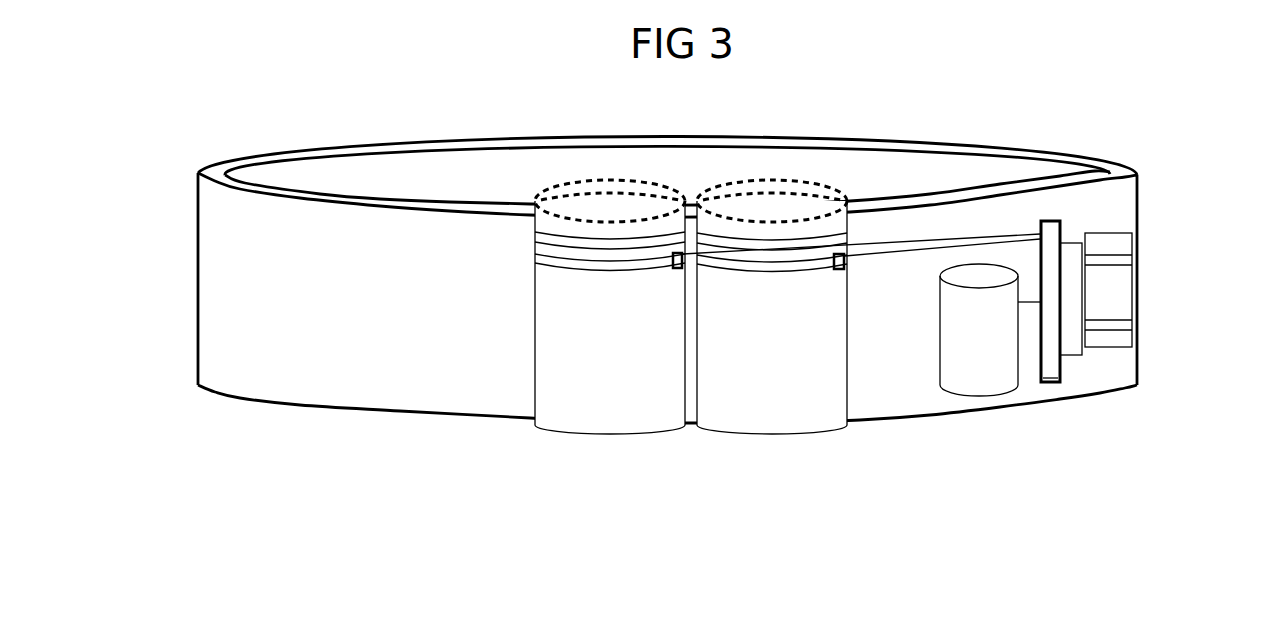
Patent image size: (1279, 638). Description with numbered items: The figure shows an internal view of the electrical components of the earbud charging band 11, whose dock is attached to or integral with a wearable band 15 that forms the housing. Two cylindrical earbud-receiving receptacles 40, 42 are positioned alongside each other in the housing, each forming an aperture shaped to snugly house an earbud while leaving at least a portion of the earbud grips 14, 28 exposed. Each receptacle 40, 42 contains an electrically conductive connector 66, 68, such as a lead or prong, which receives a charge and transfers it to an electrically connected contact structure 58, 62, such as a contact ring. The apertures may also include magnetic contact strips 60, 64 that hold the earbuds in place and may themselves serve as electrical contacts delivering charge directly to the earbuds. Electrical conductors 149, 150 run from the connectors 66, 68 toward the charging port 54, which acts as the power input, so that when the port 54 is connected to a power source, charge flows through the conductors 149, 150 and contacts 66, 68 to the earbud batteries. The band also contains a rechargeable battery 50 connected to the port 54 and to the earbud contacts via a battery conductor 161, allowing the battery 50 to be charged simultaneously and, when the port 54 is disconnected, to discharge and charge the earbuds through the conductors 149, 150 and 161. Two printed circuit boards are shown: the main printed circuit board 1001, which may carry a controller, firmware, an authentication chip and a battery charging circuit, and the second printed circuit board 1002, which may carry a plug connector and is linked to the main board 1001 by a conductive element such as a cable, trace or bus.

The earbud charging band 11 is at (187, 258).
The earbud grip 14 is at (602, 212).
The wearable band 15 is at (272, 372).
The earbud grip 28 is at (775, 212).
The earbud-receiving receptacle 40 is at (585, 368).
The earbud-receiving receptacle 42 is at (743, 368).
The rechargeable battery 50 is at (980, 370).
The charging port 54 is at (1103, 288).
The electrical contact 58 is at (534, 262).
The magnetic contact strip 60 is at (534, 243).
The electrical contact 62 is at (775, 273).
The magnetic contact strip 64 is at (790, 244).
The electrically conductive connector 66 is at (675, 268).
The electrically conductive connector 68 is at (845, 270).
The electrical conductor 149 is at (887, 241).
The electrical conductor 150 is at (883, 258).
The battery conductor 161 is at (1045, 365).
The PCB1 1001 is at (1062, 375).
The PCB2 1002 is at (1073, 258).